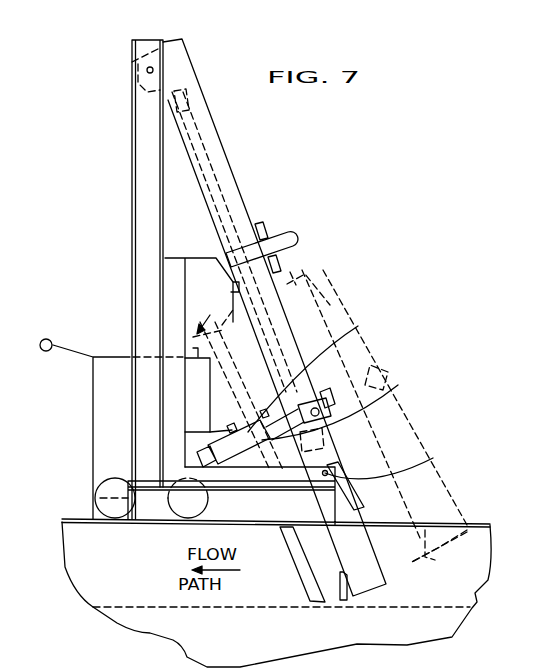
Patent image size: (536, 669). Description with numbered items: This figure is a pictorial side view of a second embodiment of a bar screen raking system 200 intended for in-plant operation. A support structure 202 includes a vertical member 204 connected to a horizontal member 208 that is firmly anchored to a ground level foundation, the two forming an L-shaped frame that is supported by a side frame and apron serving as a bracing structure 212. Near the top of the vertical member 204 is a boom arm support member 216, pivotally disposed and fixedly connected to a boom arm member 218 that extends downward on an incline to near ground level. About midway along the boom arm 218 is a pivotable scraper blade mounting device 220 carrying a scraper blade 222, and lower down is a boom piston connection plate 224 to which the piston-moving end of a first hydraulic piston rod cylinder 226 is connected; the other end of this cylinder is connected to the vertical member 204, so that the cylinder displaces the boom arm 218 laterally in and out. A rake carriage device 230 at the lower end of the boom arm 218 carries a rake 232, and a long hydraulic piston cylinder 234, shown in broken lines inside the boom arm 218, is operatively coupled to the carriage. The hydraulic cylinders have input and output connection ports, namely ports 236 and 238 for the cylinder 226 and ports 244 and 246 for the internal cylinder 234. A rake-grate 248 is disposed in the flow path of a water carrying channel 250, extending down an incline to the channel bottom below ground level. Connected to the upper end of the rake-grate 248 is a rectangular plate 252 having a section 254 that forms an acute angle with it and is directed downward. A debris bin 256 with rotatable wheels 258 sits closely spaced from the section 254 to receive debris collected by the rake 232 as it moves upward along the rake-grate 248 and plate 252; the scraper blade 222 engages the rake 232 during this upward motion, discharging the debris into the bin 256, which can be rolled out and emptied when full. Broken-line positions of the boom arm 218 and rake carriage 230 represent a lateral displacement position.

The bar screen raking system 200 is at (114, 122).
The support structure 202 is at (128, 176).
The vertical member 204 is at (142, 226).
The horizontal member 208 is at (155, 505).
The bracing structure 212 is at (178, 272).
The boom arm support member 216 is at (164, 84).
The boom arm member 218 is at (249, 206).
The pivotable scraper blade mounting device 220 is at (294, 238).
The scraper blade 222 is at (296, 268).
The boom piston connection plate 224 is at (320, 408).
The first hydraulic piston rod cylinder 226 is at (342, 328).
The rake carriage device 230 is at (458, 516).
The rake 232 is at (233, 316).
The long hydraulic piston cylinder 234 is at (222, 190).
The hydraulic input and output connection port 236 is at (388, 389).
The hydraulic input and output connection port 238 is at (186, 425).
The hydraulic input and output connection port 244 is at (183, 108).
The hydraulic input and output connection port 246 is at (430, 460).
The rake-grate 248 is at (290, 558).
The water carrying channel 250 is at (225, 598).
The rectangular plate 252 is at (227, 357).
The section 254 is at (195, 350).
The debris bin 256 is at (108, 397).
The rotatable wheels 258 is at (93, 498).